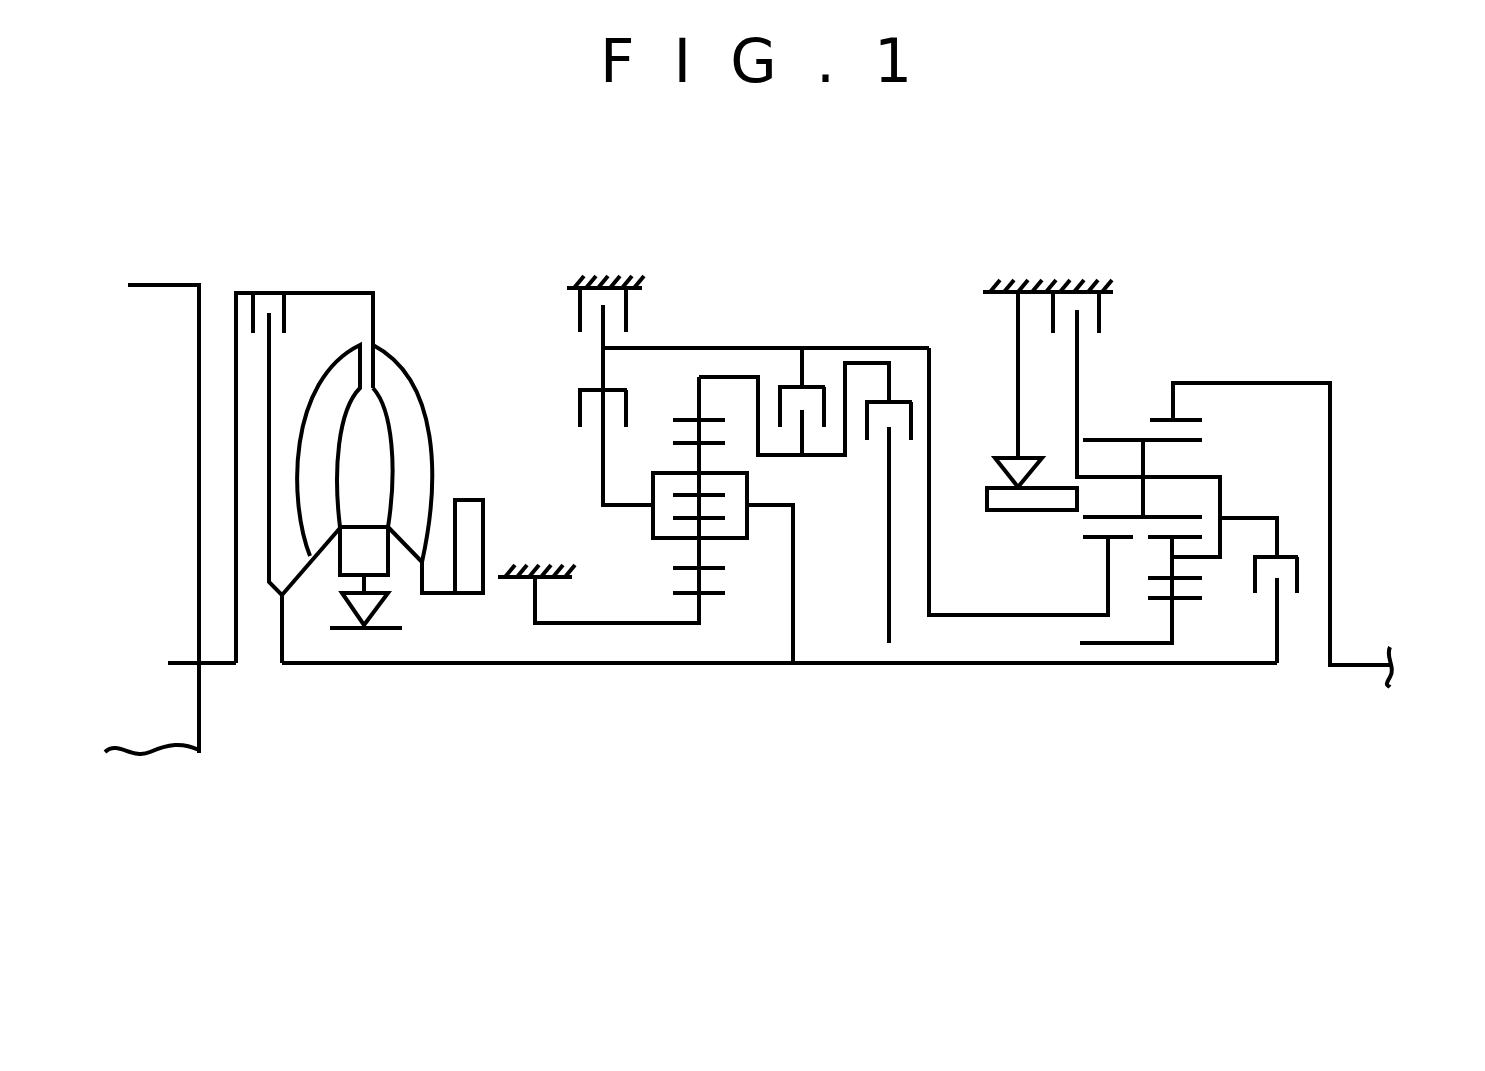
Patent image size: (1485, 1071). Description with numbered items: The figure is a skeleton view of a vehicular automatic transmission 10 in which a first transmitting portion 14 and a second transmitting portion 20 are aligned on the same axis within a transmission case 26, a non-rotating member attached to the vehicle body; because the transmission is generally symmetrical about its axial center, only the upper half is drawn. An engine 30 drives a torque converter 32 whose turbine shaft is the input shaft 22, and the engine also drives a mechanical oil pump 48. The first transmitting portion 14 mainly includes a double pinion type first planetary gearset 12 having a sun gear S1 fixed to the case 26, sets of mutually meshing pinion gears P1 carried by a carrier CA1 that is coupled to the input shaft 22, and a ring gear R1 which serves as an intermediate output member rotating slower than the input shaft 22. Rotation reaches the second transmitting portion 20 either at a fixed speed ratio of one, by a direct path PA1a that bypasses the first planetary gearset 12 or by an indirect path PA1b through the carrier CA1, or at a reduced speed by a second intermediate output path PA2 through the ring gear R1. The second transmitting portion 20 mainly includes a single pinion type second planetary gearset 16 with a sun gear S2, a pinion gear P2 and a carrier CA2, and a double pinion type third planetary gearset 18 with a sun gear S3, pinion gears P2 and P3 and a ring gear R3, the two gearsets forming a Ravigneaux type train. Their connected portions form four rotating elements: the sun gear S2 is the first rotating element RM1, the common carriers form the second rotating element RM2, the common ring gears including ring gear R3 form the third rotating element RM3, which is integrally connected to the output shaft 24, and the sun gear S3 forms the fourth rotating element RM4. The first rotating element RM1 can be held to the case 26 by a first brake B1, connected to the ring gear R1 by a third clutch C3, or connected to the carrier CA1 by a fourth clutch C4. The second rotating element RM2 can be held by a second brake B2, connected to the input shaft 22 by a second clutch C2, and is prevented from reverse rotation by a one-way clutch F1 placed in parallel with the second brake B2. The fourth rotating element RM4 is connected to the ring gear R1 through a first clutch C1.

The automatic transmission 10 is at (1245, 285).
The first planetary gearset 12 is at (712, 430).
The first transmitting portion 14 is at (801, 493).
The second planetary gearset 16 is at (1128, 424).
The third planetary gearset 18 is at (1236, 502).
The second transmitting portion 20 is at (1180, 479).
The input shaft 22 is at (427, 667).
The output shaft 24 is at (1357, 667).
The transmission case 26 is at (580, 282).
The engine 30 is at (163, 307).
The torque converter 32 is at (389, 310).
The mechanical oil pump 48 is at (470, 500).
The first brake B1 is at (578, 308).
The second brake B2 is at (1100, 312).
The first clutch C1 is at (918, 413).
The second clutch C2 is at (1303, 573).
The third clutch C3 is at (777, 410).
The fourth clutch C4 is at (578, 408).
The one-way clutch F1 is at (1028, 401).
The ring gear R1 is at (705, 417).
The ring gear R3 is at (1182, 418).
The pinion gears P1 is at (677, 443).
The pinion gear P2 is at (1090, 437).
The pinion gear P3 is at (1140, 567).
The sun gear S1 is at (712, 595).
The sun gear S2 is at (1100, 538).
The sun gear S3 is at (1180, 600).
The carrier CA1 is at (652, 518).
The carrier CA2 is at (1274, 480).
The first rotating element RM1 is at (995, 567).
The second rotating element RM2 is at (1310, 452).
The third rotating element RM3 is at (1327, 321).
The fourth rotating element RM4 is at (965, 700).
The direct path PA1a is at (847, 698).
The indirect path PA1b is at (541, 469).
The second intermediate output path PA2 is at (726, 315).